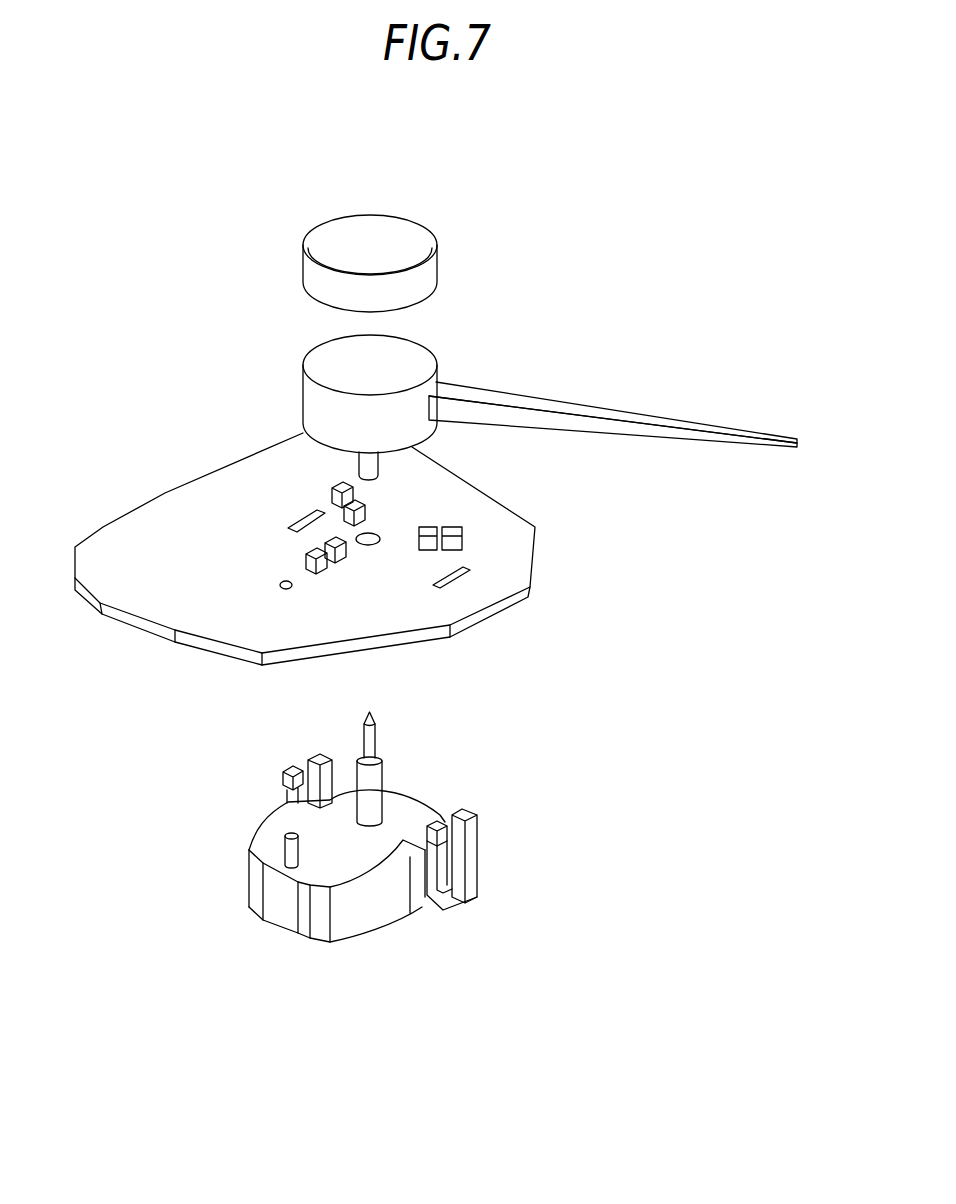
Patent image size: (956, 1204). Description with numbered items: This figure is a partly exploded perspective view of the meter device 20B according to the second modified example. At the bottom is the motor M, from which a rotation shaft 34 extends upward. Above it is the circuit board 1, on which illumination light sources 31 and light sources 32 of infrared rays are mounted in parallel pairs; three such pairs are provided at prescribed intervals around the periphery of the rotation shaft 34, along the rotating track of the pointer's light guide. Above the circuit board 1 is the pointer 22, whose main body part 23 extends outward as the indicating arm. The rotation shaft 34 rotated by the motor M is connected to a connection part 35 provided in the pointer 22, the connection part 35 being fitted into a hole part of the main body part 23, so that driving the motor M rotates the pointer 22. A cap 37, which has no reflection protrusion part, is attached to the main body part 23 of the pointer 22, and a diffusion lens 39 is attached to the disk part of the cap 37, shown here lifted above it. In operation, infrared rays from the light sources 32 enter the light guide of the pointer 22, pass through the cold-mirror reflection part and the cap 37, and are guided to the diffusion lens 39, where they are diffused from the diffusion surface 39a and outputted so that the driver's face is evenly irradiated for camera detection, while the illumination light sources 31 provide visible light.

The meter device 20B is at (201, 302).
The diffusion lens 39 is at (311, 275).
The diffusion surface 39a is at (336, 243).
The cap 37 is at (310, 405).
The connection part 35 is at (382, 468).
The pointer 22 is at (505, 390).
The main body part 23 is at (584, 402).
The circuit board 1 is at (212, 648).
The illumination light source 31 is at (336, 487).
The light source of infrared rays 32 is at (341, 515).
The motor M is at (373, 912).
The rotation shaft 34 is at (376, 732).